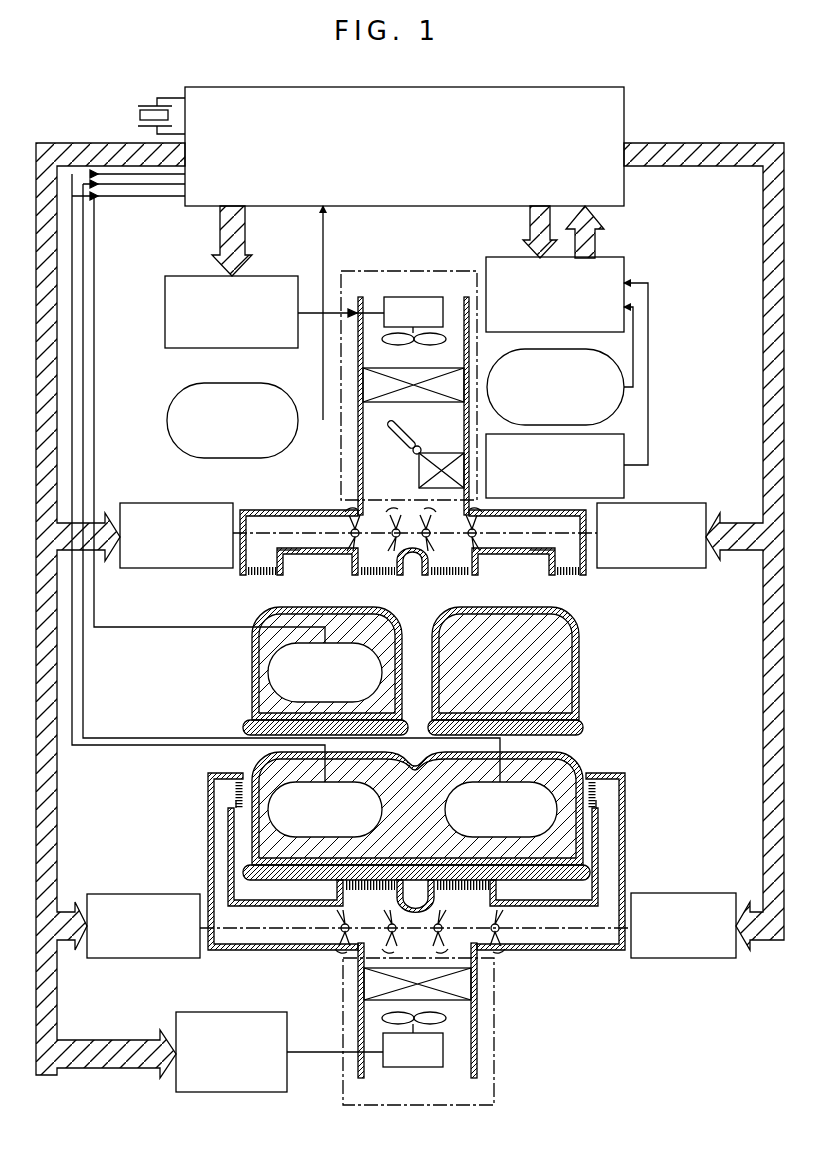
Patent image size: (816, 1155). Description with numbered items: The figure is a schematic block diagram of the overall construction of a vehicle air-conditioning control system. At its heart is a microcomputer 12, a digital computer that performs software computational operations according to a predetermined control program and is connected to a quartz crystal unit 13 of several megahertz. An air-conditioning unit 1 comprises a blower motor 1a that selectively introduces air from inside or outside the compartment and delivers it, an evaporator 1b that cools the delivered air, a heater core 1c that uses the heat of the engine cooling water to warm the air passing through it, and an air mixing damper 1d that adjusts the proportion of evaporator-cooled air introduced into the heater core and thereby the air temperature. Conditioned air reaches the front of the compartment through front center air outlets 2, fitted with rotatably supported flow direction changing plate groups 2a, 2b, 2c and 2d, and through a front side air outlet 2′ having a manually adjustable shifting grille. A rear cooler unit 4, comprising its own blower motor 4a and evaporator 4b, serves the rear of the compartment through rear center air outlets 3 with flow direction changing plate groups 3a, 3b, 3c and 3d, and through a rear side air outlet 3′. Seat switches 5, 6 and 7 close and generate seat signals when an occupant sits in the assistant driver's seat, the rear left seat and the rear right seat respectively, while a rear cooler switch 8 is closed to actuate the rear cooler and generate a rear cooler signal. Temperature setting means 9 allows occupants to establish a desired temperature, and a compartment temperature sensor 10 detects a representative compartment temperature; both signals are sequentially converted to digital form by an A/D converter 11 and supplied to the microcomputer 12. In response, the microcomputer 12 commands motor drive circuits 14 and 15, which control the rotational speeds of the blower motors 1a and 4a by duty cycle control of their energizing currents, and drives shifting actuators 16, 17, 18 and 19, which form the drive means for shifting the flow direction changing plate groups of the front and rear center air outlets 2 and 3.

The air-conditioning unit 1 is at (380, 272).
The blower motor 1a is at (427, 297).
The evaporator 1b is at (362, 380).
The heater core 1c is at (419, 468).
The air mixing damper 1d is at (420, 442).
The front center air outlets 2 is at (384, 577).
The flow direction changing plate group 2a is at (350, 546).
The flow direction changing plate group 2b is at (391, 549).
The flow direction changing plate group 2c is at (440, 549).
The flow direction changing plate group 2d is at (481, 556).
The front side air outlet 2′ is at (566, 582).
The rear center air outlets 3 is at (341, 881).
The flow direction changing plate group 3a is at (340, 938).
The flow direction changing plate group 3b is at (386, 940).
The flow direction changing plate group 3c is at (445, 935).
The flow direction changing plate group 3d is at (500, 938).
The rear side air outlet 3′ is at (246, 790).
The rear cooler unit 4 is at (497, 994).
The blower motor 4a is at (412, 1067).
The evaporator 4b is at (478, 1040).
The seat switch 5 is at (345, 650).
The seat switch 6 is at (384, 806).
The seat switch 7 is at (583, 770).
The rear cooler switch 8 is at (268, 458).
The temperature setting means 9 is at (624, 484).
The compartment temperature sensor 10 is at (616, 418).
The A/D converter 11 is at (626, 268).
The microcomputer 12 is at (626, 92).
The quartz crystal unit 13 is at (143, 104).
The motor drive circuit 14 is at (244, 348).
The motor drive circuit 15 is at (288, 1034).
The shifting actuator 16 is at (160, 503).
The shifting actuator 17 is at (680, 568).
The shifting actuator 18 is at (140, 894).
The shifting actuator 19 is at (665, 893).